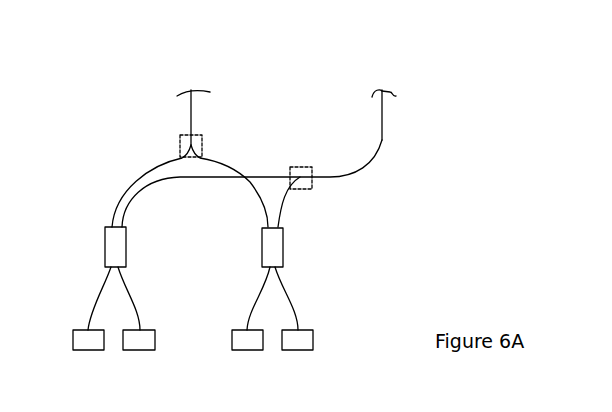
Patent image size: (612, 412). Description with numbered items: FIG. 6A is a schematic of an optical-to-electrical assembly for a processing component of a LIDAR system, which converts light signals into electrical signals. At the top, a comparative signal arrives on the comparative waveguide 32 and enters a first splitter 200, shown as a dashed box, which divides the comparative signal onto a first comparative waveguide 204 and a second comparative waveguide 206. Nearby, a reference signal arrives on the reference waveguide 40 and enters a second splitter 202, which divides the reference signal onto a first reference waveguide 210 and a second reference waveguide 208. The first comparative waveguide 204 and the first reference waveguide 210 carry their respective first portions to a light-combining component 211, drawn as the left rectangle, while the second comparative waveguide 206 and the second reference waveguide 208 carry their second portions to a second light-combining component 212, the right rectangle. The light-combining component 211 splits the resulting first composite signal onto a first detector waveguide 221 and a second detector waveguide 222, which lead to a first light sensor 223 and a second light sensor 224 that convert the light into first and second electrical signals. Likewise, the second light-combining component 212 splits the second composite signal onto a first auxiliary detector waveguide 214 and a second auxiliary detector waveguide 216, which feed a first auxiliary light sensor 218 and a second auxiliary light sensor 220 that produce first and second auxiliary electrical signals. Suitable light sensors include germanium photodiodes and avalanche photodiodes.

The comparative waveguide 32 is at (188, 111).
The reference waveguide 40 is at (382, 115).
The first splitter 200 is at (180, 140).
The second splitter 202 is at (300, 167).
The first comparative waveguide 204 is at (120, 188).
The second comparative waveguide 206 is at (255, 193).
The second reference waveguide 208 is at (284, 203).
The first reference waveguide 210 is at (172, 182).
The light-combining component 211 is at (160, 222).
The second light-combining component 212 is at (285, 257).
The first auxiliary detector waveguide 214 is at (252, 302).
The second auxiliary detector waveguide 216 is at (292, 302).
The first auxiliary light sensor 218 is at (232, 330).
The second auxiliary light sensor 220 is at (312, 330).
The first detector waveguide 221 is at (95, 303).
The second detector waveguide 222 is at (122, 288).
The first light sensor 223 is at (73, 330).
The second light sensor 224 is at (143, 353).